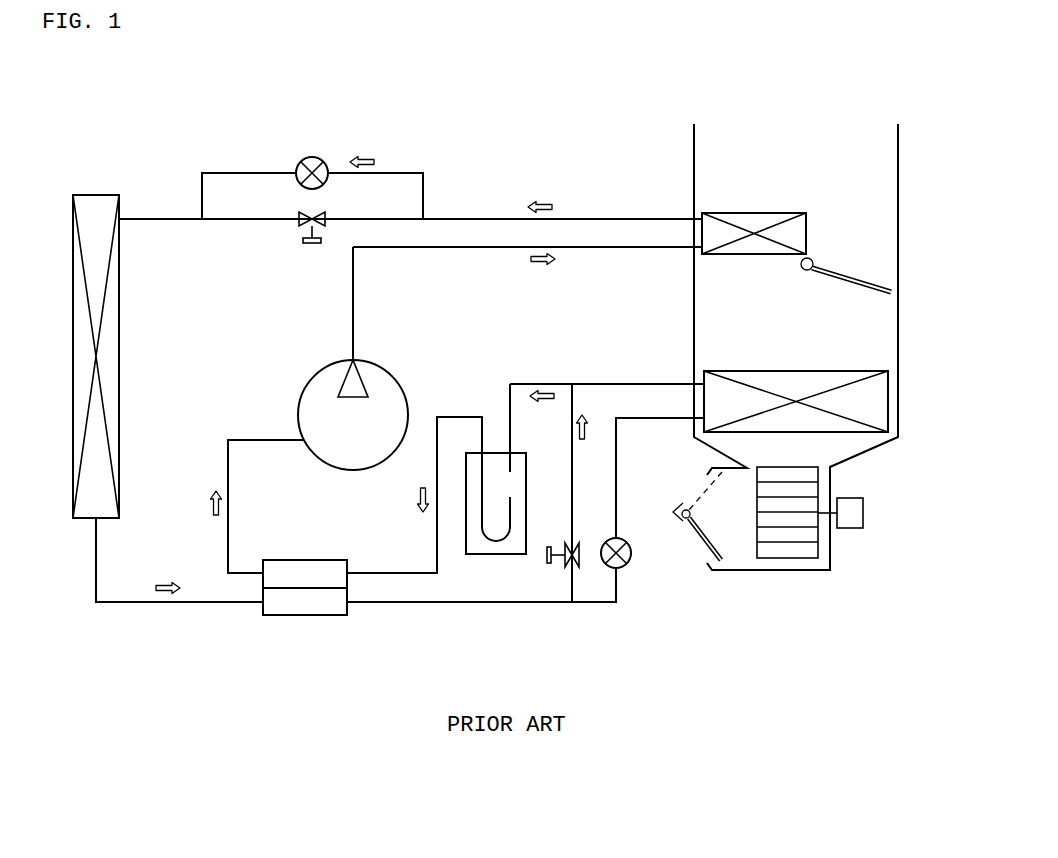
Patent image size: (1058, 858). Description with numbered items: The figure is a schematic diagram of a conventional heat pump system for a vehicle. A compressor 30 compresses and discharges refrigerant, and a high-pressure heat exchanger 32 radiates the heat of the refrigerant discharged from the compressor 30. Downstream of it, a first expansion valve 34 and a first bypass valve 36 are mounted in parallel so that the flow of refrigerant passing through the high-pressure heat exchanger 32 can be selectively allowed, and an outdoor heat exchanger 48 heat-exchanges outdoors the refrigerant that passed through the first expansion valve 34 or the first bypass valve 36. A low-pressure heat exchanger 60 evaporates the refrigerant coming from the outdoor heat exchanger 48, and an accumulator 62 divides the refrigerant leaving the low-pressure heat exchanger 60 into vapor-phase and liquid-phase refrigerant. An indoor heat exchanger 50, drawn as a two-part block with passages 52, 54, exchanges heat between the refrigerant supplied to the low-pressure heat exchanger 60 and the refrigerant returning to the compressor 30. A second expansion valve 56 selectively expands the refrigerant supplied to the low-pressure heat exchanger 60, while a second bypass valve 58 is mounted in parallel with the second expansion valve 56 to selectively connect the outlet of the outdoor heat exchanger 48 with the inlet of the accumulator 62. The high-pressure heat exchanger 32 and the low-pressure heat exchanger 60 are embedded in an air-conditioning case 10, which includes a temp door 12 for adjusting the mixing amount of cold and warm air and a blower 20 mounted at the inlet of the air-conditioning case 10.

The air-conditioning case 10 is at (898, 155).
The temp door 12 is at (862, 272).
The blower 20 is at (806, 492).
The compressor 30 is at (320, 366).
The high-pressure heat exchanger 32 is at (752, 210).
The first expansion valve 34 is at (312, 156).
The first bypass valve 36 is at (310, 248).
The outdoor heat exchanger 48 is at (95, 194).
The indoor heat exchanger 50 is at (313, 596).
The lower heat exchange passage 52 is at (297, 610).
The upper heat exchange passage 54 is at (297, 570).
The second expansion valve 56 is at (630, 568).
The second bypass valve 58 is at (548, 563).
The low-pressure heat exchanger 60 is at (870, 400).
The accumulator 62 is at (497, 453).